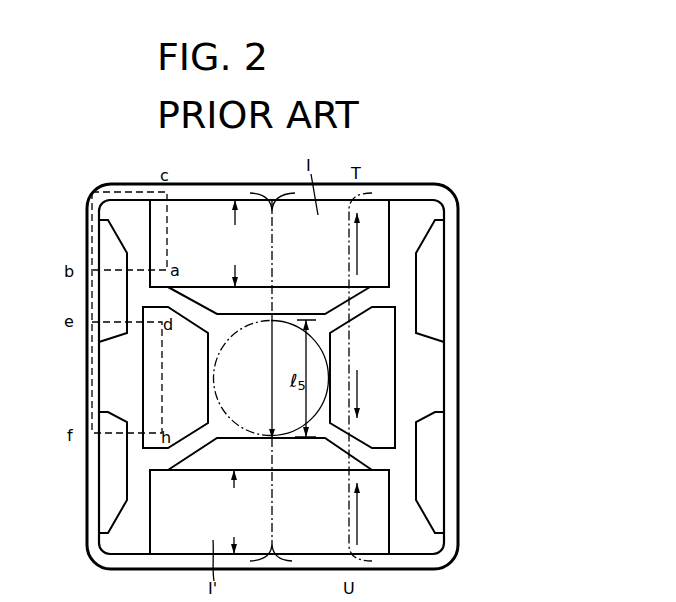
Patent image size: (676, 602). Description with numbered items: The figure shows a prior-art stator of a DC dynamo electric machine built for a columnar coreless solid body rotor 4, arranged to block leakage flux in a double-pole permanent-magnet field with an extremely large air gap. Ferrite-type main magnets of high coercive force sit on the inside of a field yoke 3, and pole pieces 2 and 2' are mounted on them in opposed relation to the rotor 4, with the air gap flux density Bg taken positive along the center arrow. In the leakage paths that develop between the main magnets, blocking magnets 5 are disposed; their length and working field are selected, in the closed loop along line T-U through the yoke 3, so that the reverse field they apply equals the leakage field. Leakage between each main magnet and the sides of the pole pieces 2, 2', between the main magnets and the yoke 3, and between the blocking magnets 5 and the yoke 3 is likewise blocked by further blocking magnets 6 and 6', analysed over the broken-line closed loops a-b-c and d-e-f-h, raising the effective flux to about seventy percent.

The pole piece 2 is at (269, 257).
The pole piece 2' is at (269, 496).
The field yoke 3 is at (88, 458).
The columnar coreless solid body rotor 4 is at (213, 344).
The blocking magnet 5 is at (145, 382).
The blocking magnet 6 is at (263, 278).
The blocking magnet 6' is at (260, 472).